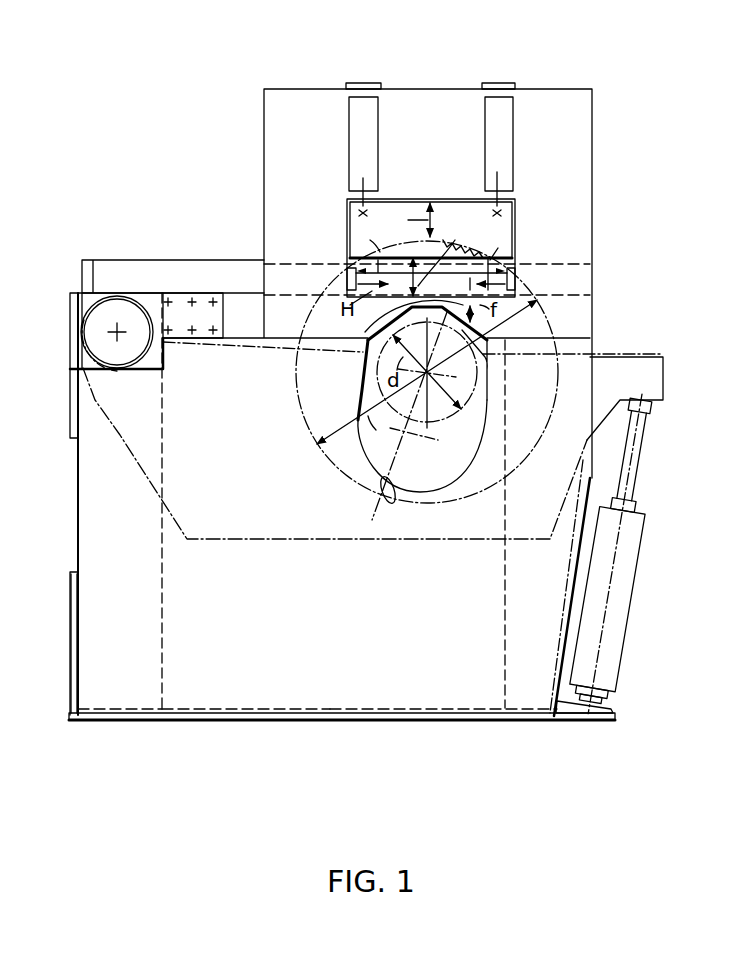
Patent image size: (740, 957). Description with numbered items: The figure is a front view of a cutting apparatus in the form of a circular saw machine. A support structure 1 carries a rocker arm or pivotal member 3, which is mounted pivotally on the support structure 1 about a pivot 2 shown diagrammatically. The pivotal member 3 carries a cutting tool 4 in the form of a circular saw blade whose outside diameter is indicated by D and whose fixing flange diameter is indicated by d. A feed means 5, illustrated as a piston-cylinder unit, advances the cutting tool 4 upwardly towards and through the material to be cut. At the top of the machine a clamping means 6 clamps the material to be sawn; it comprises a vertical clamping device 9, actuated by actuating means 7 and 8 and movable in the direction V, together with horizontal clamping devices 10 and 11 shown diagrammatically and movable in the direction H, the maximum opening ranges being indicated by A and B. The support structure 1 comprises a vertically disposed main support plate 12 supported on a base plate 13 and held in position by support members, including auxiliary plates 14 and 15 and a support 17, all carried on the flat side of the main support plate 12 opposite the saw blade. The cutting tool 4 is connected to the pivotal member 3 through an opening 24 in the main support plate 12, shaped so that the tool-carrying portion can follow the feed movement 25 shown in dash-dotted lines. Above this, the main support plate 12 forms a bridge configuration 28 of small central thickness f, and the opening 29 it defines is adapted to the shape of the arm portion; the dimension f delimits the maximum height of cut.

The support structure 1 is at (323, 723).
The pivot 2 is at (117, 328).
The pivotal member 3 is at (310, 522).
The cutting tool 4 is at (316, 415).
The feed means 5 is at (636, 607).
The clamping means 6 is at (604, 76).
The actuating means 7 is at (500, 133).
The actuating means 8 is at (360, 127).
The vertical clamping device 9 is at (483, 228).
The horizontal clamping device 10 is at (347, 278).
The horizontal clamping device 11 is at (515, 279).
The main support plate 12 is at (470, 702).
The base plate 13 is at (202, 712).
The auxiliary plate 14 is at (72, 711).
The auxiliary plate 15 is at (555, 717).
The support 17 is at (133, 697).
The opening 24 is at (422, 492).
The feed movement 25 is at (398, 470).
The bridge configuration 28 is at (366, 345).
The opening 29 is at (487, 357).